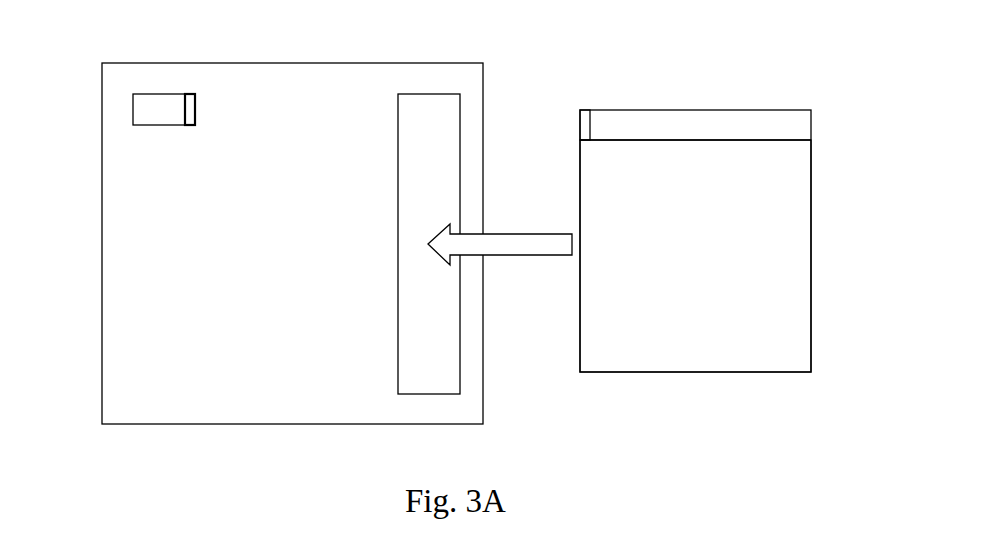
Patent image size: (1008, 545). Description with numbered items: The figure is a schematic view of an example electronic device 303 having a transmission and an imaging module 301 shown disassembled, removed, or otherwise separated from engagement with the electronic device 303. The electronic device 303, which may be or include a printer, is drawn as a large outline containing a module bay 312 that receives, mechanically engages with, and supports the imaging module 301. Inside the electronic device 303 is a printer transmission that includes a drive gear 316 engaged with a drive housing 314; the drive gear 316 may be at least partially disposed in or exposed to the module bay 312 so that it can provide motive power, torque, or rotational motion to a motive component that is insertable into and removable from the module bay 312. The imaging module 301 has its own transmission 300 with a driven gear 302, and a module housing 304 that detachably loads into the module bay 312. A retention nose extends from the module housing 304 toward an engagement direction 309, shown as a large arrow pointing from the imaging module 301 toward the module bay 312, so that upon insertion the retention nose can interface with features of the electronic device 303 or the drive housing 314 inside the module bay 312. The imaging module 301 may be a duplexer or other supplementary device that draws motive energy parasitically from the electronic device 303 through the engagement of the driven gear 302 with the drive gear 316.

The transmission 300 is at (663, 137).
The imaging module 301 is at (709, 249).
The driven gear 302 is at (584, 124).
The electronic device 303 is at (176, 32).
The module housing 304 is at (781, 254).
The engagement direction 309 is at (548, 242).
The module bay 312 is at (416, 129).
The drive housing 314 is at (148, 102).
The drive gear 316 is at (190, 110).